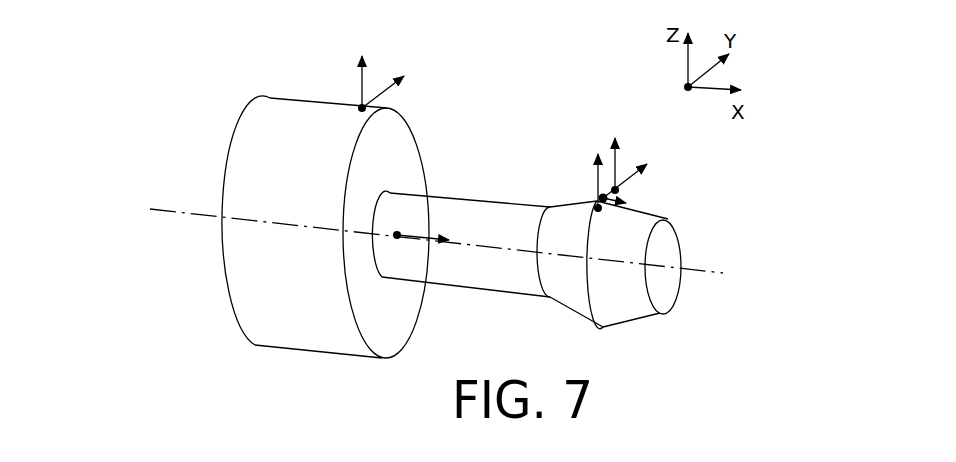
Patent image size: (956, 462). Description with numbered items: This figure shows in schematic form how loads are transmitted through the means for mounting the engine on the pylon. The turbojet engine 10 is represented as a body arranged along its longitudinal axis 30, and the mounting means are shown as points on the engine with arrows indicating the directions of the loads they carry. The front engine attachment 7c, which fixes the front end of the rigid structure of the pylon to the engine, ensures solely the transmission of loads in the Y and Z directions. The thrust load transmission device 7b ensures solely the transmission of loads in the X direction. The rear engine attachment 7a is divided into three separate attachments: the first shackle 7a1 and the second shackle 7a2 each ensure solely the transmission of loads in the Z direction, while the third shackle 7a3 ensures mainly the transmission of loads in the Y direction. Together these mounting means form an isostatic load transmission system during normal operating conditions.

The turbojet engine 10 is at (213, 309).
The longitudinal axis 30 is at (710, 274).
The rear engine attachment 7a is at (670, 219).
The first shackle 7a1 is at (596, 207).
The second shackle 7a2 is at (618, 189).
The third shackle 7a3 is at (603, 195).
The thrust load transmission device 7b is at (397, 235).
The front engine attachment 7c is at (358, 105).